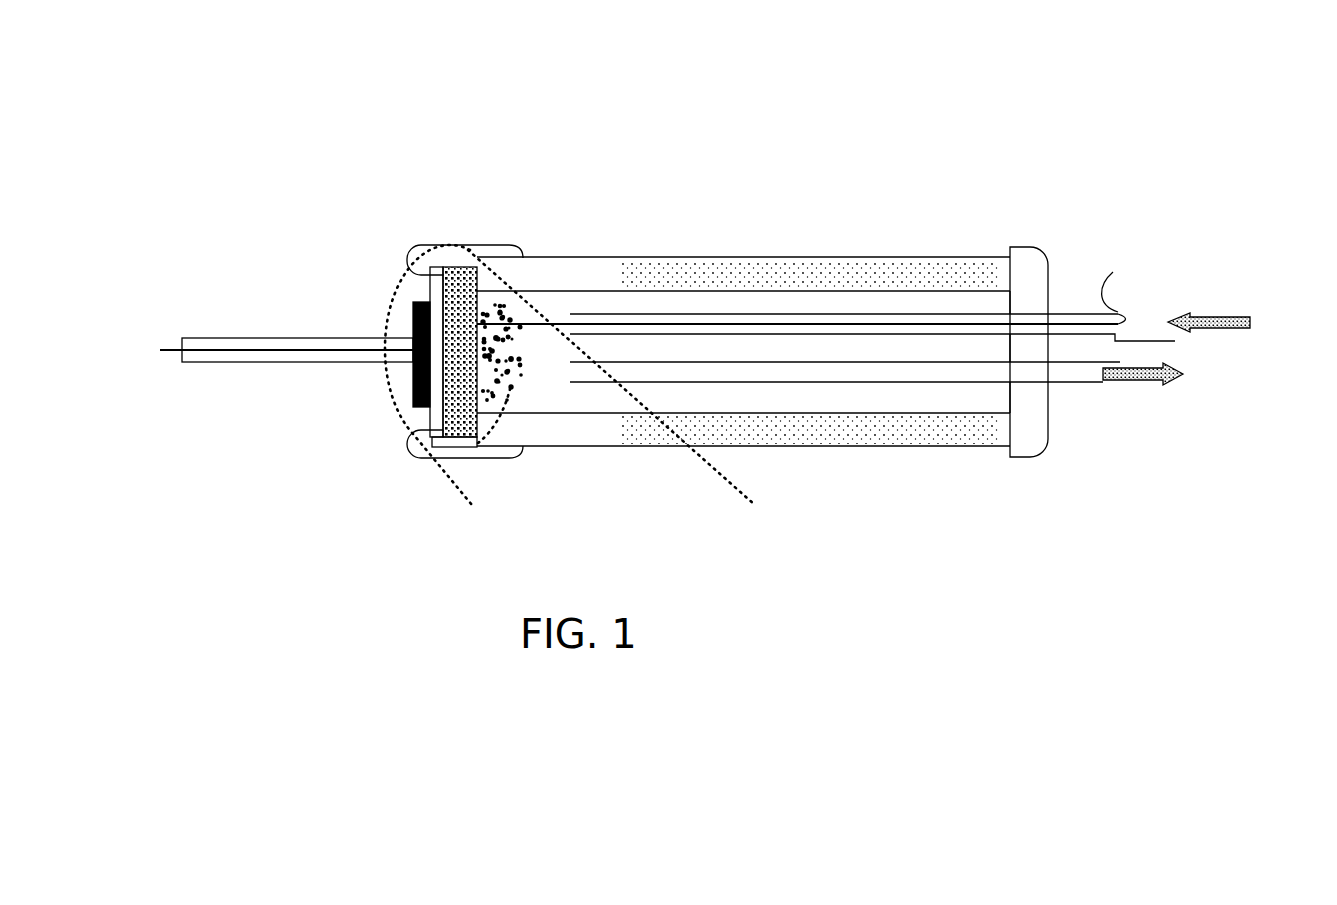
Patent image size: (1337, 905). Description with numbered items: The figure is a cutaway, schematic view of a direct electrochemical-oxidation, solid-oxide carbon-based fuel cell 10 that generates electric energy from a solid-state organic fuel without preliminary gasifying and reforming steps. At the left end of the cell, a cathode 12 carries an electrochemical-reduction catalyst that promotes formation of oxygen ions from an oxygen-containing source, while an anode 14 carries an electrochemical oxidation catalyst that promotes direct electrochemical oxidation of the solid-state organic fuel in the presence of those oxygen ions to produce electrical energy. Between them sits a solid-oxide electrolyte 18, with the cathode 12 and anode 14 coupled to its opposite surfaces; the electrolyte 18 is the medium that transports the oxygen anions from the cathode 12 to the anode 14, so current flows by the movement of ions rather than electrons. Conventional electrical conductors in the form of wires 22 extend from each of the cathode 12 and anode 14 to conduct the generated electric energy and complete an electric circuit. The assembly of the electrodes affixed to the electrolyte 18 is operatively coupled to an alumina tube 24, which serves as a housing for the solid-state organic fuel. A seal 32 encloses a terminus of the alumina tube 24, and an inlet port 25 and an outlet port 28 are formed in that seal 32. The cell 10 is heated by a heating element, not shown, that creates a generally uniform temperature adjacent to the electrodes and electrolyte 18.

The fuel cell 10 is at (367, 280).
The cathode 12 is at (396, 404).
The anode 14 is at (470, 448).
The solid-oxide electrolyte 18 is at (430, 447).
The wires 22 is at (1175, 242).
The alumina tube 24 is at (887, 468).
The inlet port 25 is at (1118, 308).
The outlet port 28 is at (1080, 383).
The seal 32 is at (540, 229).